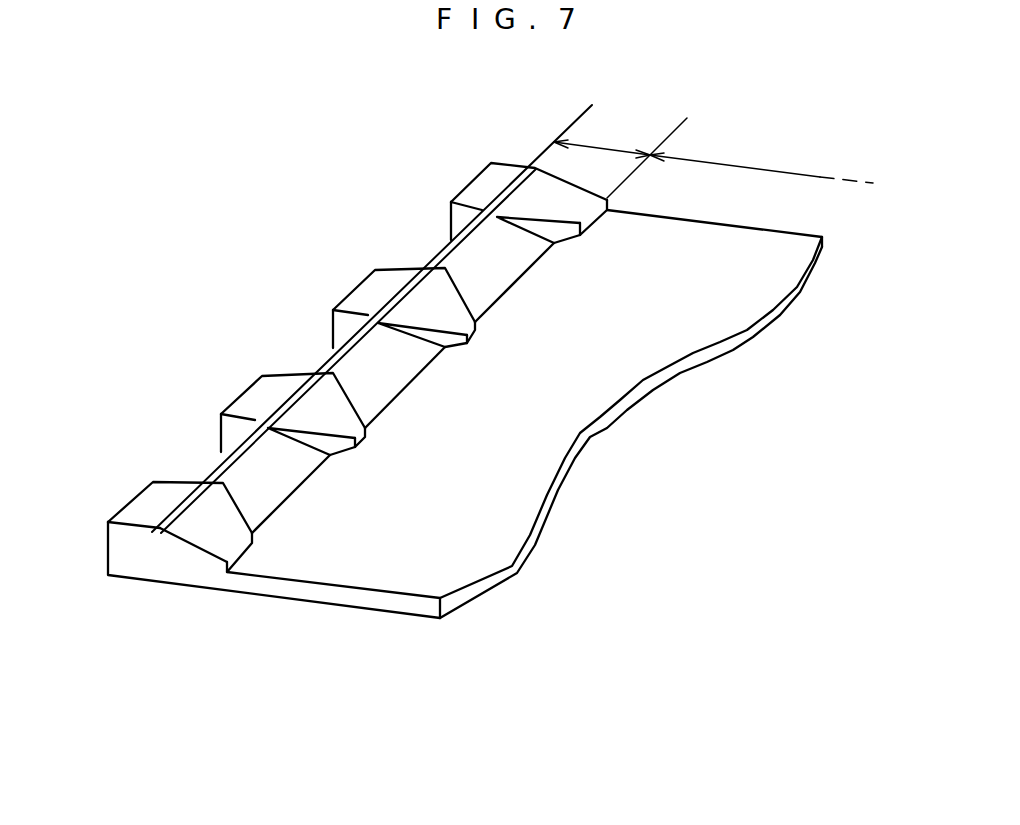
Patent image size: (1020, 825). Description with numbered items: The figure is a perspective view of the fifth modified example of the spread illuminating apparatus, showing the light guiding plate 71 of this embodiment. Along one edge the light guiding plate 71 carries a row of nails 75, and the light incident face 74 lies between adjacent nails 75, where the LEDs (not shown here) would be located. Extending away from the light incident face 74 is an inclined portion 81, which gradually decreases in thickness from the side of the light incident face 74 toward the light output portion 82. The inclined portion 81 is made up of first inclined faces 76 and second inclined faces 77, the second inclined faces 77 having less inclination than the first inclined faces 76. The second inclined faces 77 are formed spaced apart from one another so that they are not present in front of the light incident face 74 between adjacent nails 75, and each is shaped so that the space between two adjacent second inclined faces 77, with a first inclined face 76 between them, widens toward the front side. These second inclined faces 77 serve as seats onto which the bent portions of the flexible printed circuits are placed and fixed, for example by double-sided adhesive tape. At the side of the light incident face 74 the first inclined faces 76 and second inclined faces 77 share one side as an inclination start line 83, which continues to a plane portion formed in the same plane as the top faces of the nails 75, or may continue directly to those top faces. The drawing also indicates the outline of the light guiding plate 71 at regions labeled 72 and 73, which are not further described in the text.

The light guiding plate 71 is at (340, 606).
The plate body 72 is at (512, 498).
The curved side edge 73 is at (508, 574).
The light incident face 74 is at (478, 262).
The nails 75 is at (492, 177).
The first inclined faces 76 is at (451, 222).
The second inclined faces 77 is at (553, 207).
The inclined portion 81 is at (620, 156).
The light output portion 82 is at (761, 157).
The inclination start line 83 is at (178, 510).